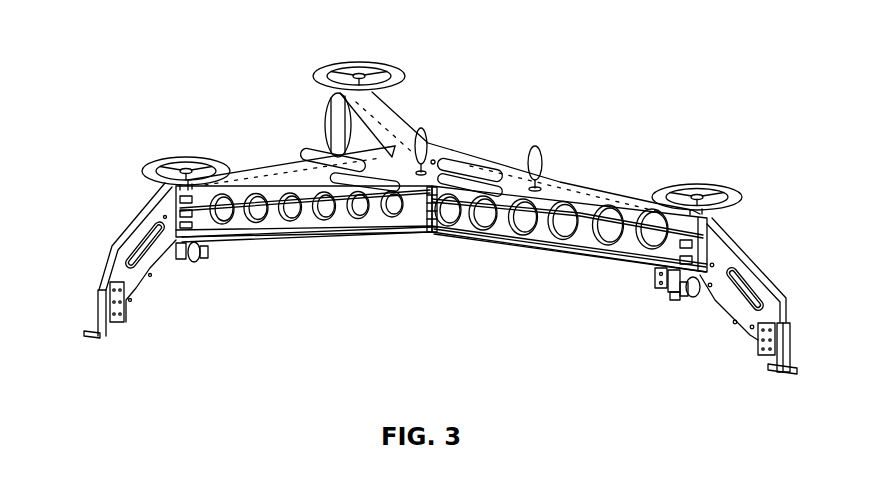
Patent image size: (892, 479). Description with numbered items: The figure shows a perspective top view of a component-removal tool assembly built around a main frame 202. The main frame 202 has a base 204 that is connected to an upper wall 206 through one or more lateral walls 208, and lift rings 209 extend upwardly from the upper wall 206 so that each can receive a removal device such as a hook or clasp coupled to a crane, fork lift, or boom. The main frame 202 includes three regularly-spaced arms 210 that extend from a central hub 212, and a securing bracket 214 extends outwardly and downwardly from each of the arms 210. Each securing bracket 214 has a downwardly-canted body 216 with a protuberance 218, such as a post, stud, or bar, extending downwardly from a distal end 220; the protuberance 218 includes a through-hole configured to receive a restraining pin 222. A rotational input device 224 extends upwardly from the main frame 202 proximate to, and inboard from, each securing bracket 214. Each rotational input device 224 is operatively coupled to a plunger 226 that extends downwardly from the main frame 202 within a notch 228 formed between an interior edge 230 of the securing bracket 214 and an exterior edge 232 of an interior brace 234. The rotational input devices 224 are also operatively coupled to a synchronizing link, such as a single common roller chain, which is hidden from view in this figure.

The main frame 202 is at (186, 62).
The base 204 is at (477, 240).
The upper wall 206 is at (470, 158).
The lateral wall 208 is at (345, 222).
The lift ring 209 is at (332, 103).
The arm 210 is at (275, 172).
The central hub 212 is at (432, 160).
The securing bracket 214 is at (107, 268).
The downwardly-canted body 216 is at (160, 212).
The protuberance 218 is at (95, 328).
The distal end 220 is at (130, 300).
The restraining pin 222 is at (775, 377).
The rotational input device 224 is at (165, 157).
The plunger 226 is at (178, 260).
The notch 228 is at (672, 292).
The interior edge 230 is at (692, 300).
The exterior edge 232 is at (190, 263).
The interior brace 234 is at (202, 260).